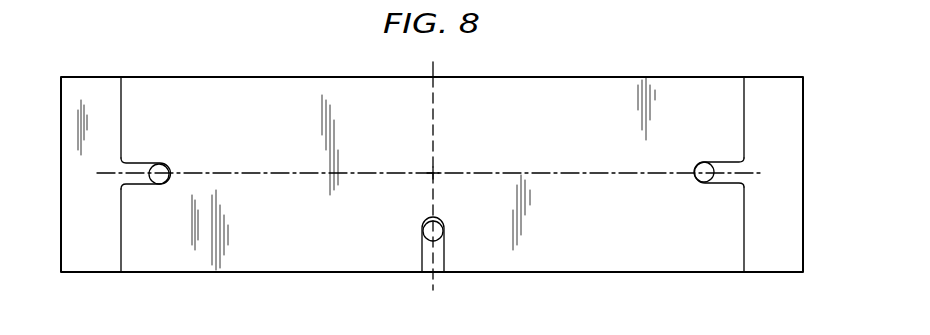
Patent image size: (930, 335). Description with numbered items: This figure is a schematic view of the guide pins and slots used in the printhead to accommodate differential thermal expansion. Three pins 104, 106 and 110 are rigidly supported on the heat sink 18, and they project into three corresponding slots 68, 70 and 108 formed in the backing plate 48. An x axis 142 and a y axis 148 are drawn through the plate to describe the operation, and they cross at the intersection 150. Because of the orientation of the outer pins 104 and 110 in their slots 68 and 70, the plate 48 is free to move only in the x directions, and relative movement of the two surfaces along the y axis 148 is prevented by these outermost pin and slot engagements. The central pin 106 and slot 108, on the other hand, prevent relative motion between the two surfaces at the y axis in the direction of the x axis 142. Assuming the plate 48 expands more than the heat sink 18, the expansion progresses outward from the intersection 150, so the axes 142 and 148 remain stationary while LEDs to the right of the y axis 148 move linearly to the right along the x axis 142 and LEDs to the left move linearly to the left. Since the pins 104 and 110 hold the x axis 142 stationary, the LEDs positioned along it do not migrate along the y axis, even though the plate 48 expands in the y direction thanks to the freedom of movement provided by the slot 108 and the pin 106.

The heat sink 18 is at (93, 88).
The backing plate 48 is at (305, 77).
The slot 70 is at (128, 178).
The pin 110 is at (151, 165).
The slot 68 is at (735, 178).
The pin 104 is at (703, 160).
The slot 108 is at (428, 262).
The pin 106 is at (441, 234).
The x axis 142 is at (539, 172).
The y axis 148 is at (433, 95).
The intersection 150 is at (433, 176).